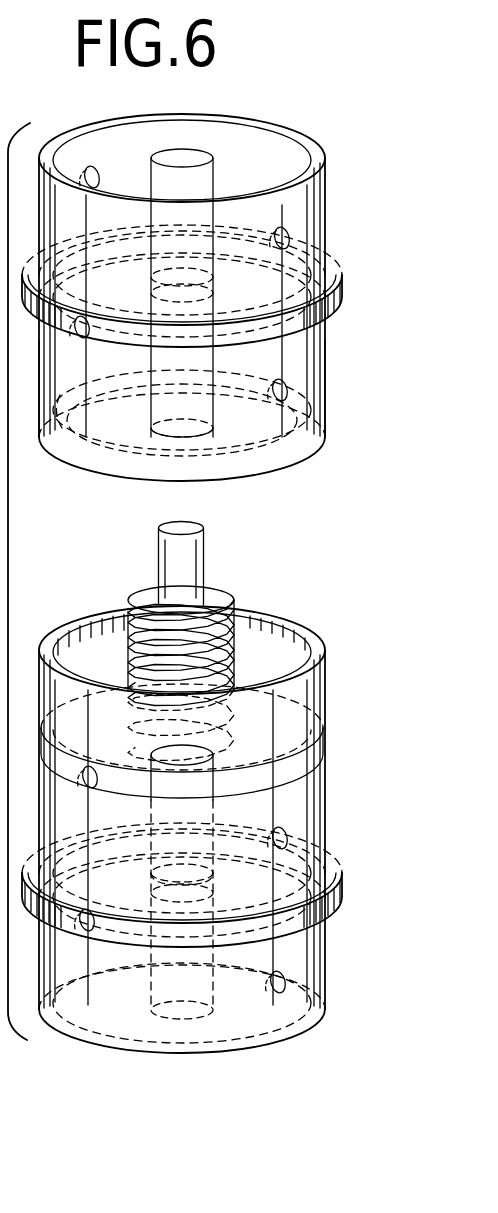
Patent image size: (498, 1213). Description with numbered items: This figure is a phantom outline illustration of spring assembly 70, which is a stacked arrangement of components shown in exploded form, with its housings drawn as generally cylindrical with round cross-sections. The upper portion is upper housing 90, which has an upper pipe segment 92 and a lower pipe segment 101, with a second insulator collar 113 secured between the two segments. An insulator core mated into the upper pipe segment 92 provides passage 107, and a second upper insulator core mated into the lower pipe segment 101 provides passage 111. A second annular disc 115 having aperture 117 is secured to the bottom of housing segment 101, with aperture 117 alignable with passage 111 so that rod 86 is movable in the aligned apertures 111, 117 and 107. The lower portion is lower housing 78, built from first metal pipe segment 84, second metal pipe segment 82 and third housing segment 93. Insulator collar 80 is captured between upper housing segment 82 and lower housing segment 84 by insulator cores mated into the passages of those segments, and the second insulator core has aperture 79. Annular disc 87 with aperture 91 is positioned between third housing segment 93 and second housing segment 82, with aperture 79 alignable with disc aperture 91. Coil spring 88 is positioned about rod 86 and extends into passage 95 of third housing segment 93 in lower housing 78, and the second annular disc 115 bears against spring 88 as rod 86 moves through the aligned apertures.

The spring assembly 70 is at (385, 546).
The lower housing 78 is at (335, 844).
The aperture 79 is at (209, 861).
The insulator collar 80 is at (370, 870).
The second metal pipe segment 82 is at (325, 803).
The first metal pipe segment 84 is at (325, 968).
The rod 86 is at (207, 548).
The annular disc 87 is at (324, 750).
The coil spring 88 is at (234, 589).
The upper housing 90 is at (383, 255).
The aperture 91 is at (196, 758).
The upper pipe segment 92 is at (325, 212).
The third housing segment 93 is at (325, 690).
The passage 95 is at (288, 645).
The lower pipe segment 101 is at (324, 383).
The passage 107 is at (196, 164).
The passage 111 is at (216, 425).
The second insulator collar 113 is at (339, 292).
The second annular disc 115 is at (324, 430).
The aperture 117 is at (182, 413).